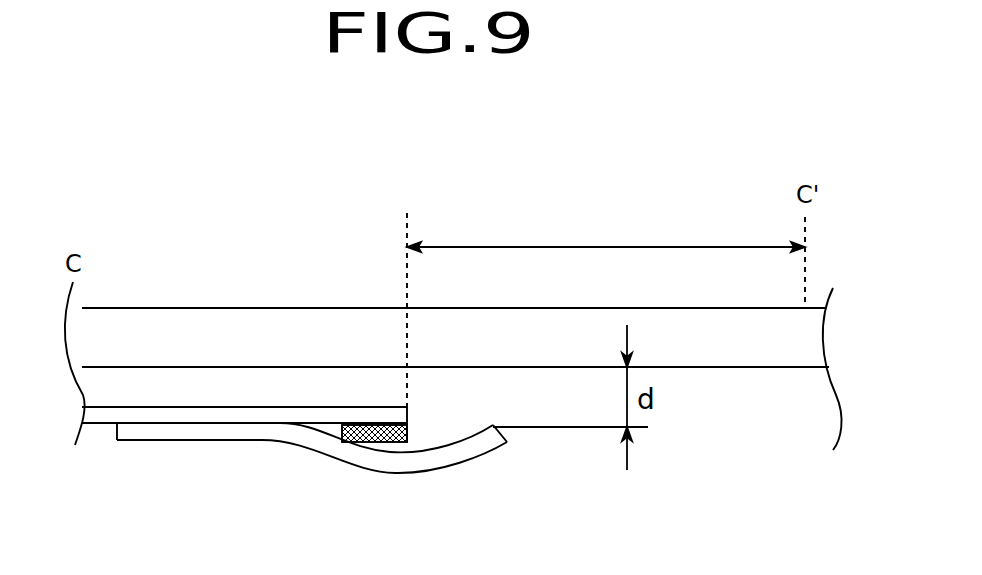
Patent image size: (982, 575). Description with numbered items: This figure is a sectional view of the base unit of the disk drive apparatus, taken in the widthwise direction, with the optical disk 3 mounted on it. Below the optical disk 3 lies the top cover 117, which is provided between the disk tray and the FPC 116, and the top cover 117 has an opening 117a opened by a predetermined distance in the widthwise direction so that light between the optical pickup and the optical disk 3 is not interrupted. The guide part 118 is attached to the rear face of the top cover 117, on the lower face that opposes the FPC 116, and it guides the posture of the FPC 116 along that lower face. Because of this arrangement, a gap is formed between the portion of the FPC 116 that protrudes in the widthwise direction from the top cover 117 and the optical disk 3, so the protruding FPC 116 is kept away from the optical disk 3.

The optical disk 3 is at (305, 319).
The opening 117a is at (609, 246).
The top cover 117 is at (175, 414).
The guide part 118 is at (375, 445).
The FPC 116 is at (488, 440).